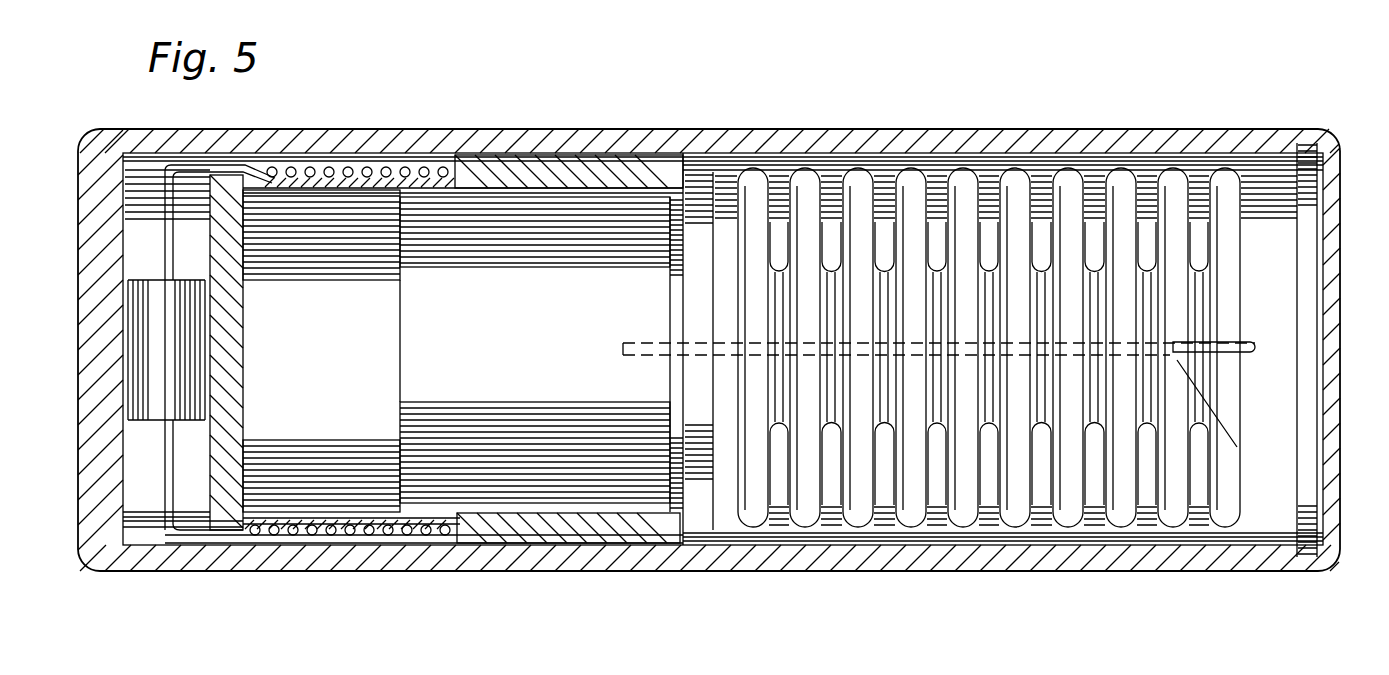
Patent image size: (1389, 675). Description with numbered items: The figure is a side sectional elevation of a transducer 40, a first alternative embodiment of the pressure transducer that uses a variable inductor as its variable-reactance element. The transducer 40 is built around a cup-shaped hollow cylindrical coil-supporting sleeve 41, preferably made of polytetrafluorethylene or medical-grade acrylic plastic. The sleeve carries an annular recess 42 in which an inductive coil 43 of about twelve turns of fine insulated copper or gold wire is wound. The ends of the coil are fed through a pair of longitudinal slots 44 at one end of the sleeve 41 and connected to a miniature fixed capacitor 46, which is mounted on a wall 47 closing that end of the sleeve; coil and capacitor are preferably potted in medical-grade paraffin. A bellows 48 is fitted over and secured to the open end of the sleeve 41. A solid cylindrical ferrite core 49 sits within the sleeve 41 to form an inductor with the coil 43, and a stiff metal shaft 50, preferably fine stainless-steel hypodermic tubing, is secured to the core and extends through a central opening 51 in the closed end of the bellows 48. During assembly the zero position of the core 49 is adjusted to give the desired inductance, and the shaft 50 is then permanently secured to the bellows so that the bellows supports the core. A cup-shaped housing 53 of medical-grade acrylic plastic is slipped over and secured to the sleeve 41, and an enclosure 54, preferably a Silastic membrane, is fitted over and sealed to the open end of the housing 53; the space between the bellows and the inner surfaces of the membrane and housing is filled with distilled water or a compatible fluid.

The transducer 40 is at (72, 433).
The coil-supporting sleeve 41 is at (278, 205).
The annular recess 42 is at (267, 530).
The inductive coil 43 is at (437, 162).
The longitudinal slots 44 is at (256, 512).
The fixed capacitor 46 is at (157, 422).
The wall 47 is at (247, 378).
The bellows 48 is at (1243, 288).
The ferrite core 49 is at (572, 213).
The shaft 50 is at (672, 357).
The central opening 51 is at (1252, 333).
The housing 53 is at (80, 553).
The enclosure 54 is at (1340, 458).